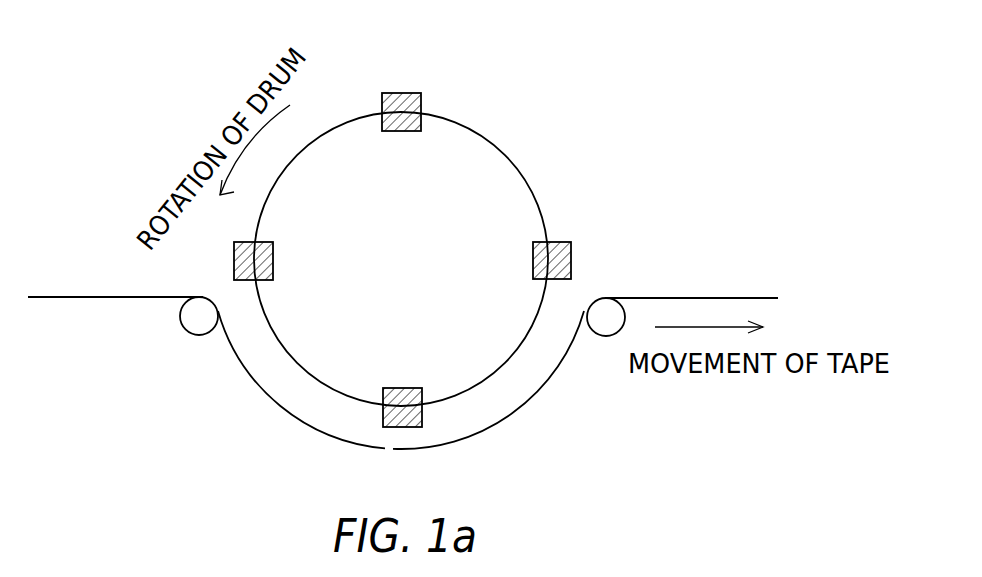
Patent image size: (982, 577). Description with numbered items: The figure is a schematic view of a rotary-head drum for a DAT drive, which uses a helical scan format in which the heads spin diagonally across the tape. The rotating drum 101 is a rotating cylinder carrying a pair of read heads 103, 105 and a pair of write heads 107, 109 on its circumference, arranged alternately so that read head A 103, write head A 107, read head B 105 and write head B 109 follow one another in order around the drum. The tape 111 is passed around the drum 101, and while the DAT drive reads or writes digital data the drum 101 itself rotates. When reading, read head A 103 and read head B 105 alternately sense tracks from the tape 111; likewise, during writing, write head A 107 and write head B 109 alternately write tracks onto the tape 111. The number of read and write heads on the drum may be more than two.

The rotating drum 101 is at (522, 168).
The read head A 103 is at (407, 388).
The read head B 105 is at (408, 93).
The write head A 107 is at (262, 242).
The write head B 109 is at (563, 242).
The tape 111 is at (728, 298).